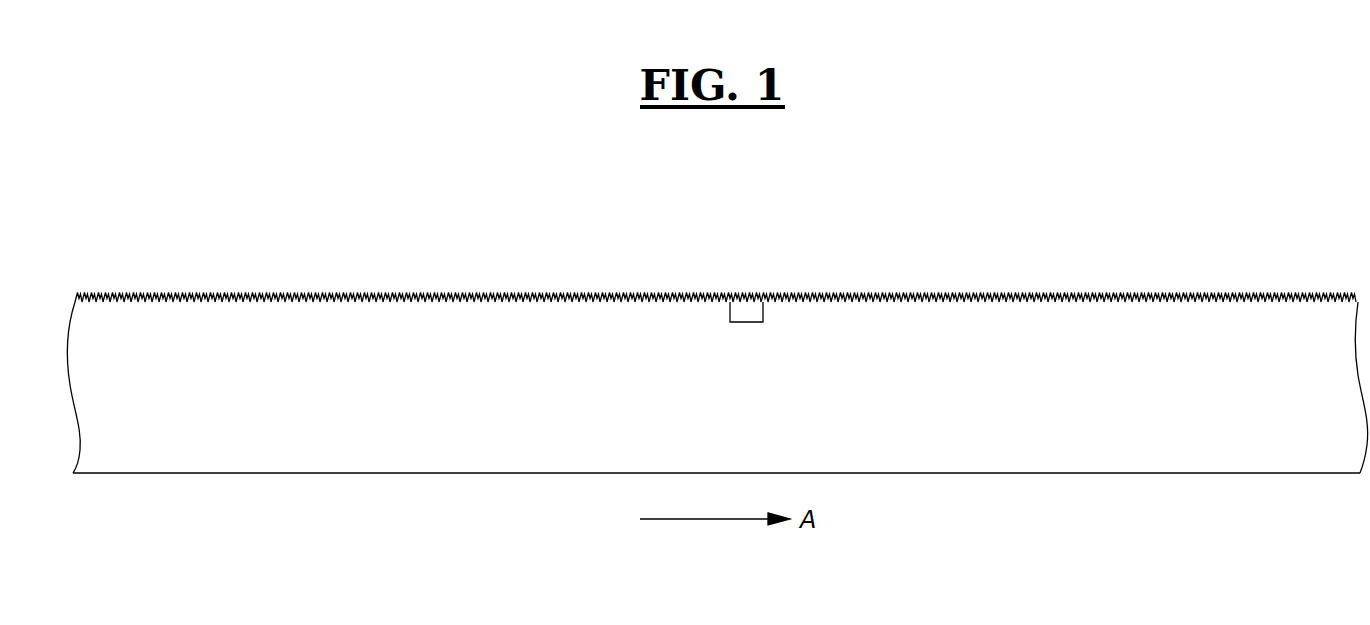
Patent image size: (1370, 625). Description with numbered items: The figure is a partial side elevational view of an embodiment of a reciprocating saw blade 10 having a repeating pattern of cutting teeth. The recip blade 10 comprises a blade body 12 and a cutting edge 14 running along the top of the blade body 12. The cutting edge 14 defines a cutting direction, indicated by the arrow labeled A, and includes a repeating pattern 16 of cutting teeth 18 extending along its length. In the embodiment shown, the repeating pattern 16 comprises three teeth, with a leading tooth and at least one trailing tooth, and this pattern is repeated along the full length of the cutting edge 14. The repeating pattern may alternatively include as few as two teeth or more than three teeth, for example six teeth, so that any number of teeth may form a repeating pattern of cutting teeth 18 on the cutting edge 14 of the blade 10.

The reciprocating saw blade 10 is at (717, 307).
The blade body 12 is at (1185, 488).
The cutting edge 14 is at (715, 270).
The repeating pattern 16 is at (774, 334).
The cutting teeth 18 is at (864, 274).